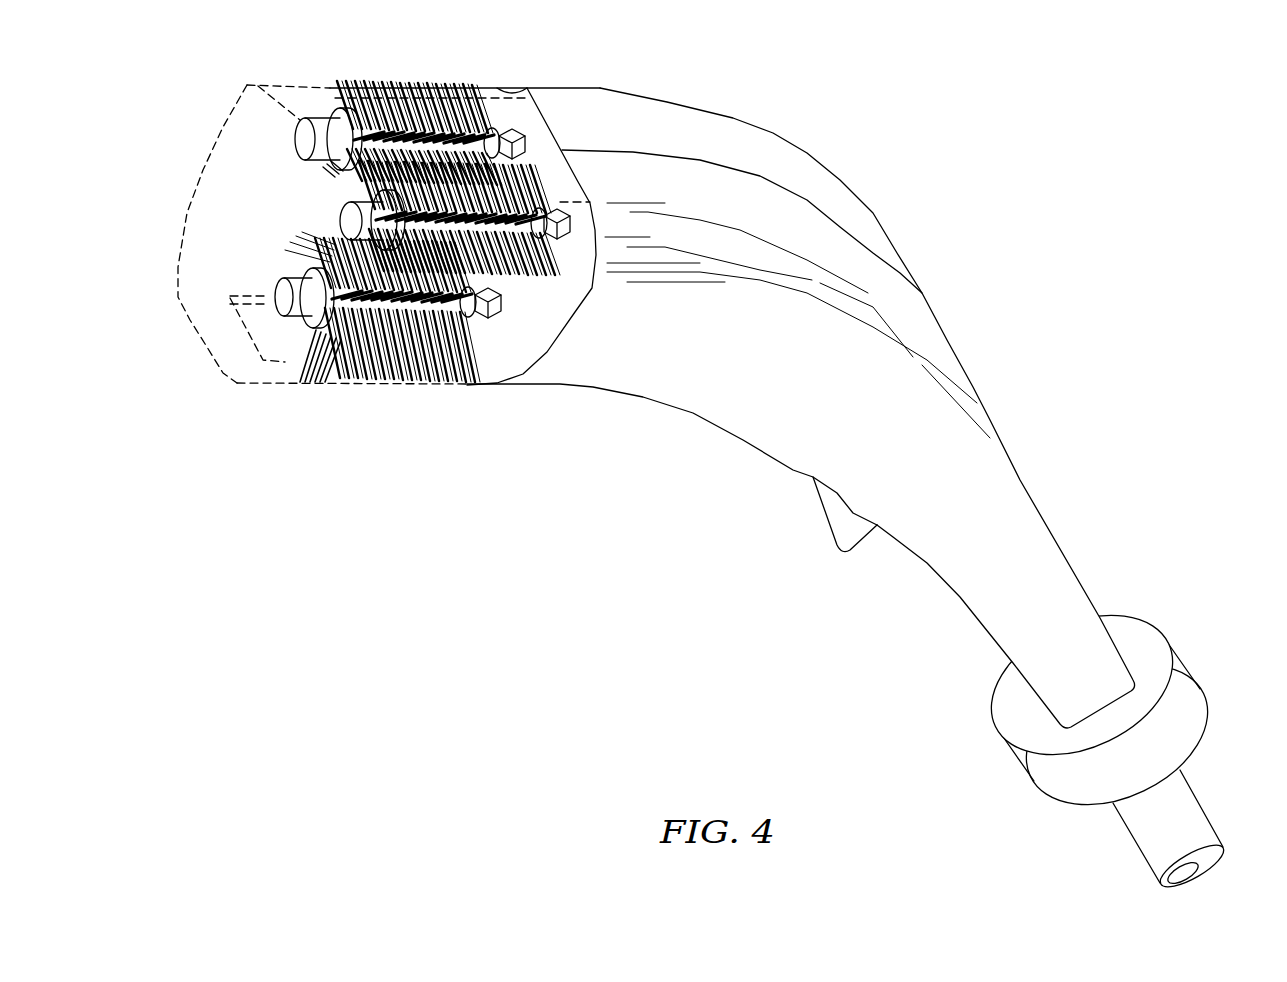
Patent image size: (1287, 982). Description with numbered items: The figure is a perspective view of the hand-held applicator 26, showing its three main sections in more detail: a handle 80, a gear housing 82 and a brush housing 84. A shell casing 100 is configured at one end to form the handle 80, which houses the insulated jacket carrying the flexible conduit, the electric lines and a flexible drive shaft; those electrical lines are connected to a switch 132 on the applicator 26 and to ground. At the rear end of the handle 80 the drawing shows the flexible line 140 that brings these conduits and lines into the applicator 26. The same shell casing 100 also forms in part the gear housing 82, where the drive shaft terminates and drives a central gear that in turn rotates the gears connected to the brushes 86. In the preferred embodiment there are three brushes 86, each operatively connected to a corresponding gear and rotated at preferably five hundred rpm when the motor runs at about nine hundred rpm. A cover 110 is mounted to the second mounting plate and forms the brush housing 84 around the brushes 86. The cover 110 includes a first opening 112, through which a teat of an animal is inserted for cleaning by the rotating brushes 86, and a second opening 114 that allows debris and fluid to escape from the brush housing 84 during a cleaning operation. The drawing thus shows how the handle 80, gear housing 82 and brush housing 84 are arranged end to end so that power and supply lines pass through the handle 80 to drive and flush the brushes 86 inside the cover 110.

The applicator 26 is at (988, 190).
The handle 80 is at (1047, 520).
The gear housing 82 is at (565, 78).
The brush housing 84 is at (206, 132).
The brushes 86 is at (404, 70).
The shell casing 100 is at (838, 397).
The cover 110 is at (194, 194).
The first opening 112 is at (545, 158).
The second opening 114 is at (268, 337).
The switch 132 is at (827, 530).
The cable 140 is at (1203, 807).